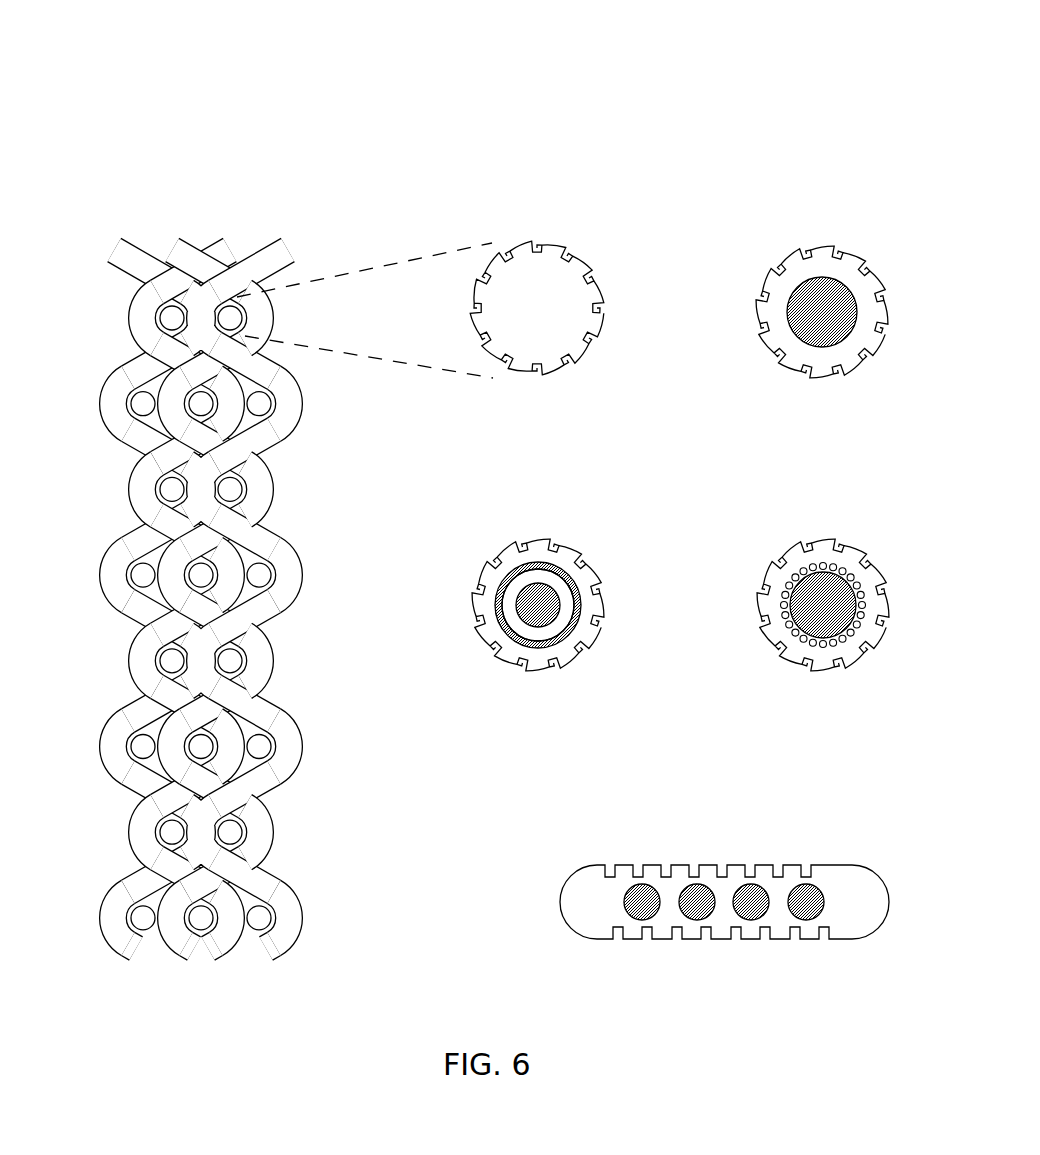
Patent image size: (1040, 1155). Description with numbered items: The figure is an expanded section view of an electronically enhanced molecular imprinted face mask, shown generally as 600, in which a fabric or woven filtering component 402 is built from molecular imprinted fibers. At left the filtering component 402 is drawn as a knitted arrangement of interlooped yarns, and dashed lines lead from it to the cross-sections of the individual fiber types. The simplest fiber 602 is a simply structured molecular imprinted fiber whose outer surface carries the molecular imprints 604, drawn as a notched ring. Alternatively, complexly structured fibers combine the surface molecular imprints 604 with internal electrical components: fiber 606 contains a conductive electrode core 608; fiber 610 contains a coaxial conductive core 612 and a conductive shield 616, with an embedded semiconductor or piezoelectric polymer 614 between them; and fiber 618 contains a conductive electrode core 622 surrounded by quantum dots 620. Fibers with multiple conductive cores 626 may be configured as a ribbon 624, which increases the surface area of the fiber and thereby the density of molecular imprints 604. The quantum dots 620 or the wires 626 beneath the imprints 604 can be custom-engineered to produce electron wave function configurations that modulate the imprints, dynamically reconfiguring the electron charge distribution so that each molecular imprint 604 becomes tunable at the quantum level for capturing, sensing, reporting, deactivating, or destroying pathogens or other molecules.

The textile system with embedded yarns 600 is at (163, 474).
The fabric or woven filtering component 402 is at (287, 228).
The simply structured molecular imprinted fibers 602 is at (420, 288).
The molecular imprints 604 is at (576, 364).
The complexly structured molecular imprinted fiber 606 is at (835, 288).
The conductive electrode core 608 is at (847, 287).
The complexly structured molecular imprinted fiber 610 is at (551, 604).
The coaxial conductive core 612 is at (573, 565).
The embedded semiconductor or piezoelectric polymer 614 is at (594, 586).
The conductive shield 616 is at (565, 612).
The complexly structured molecular imprinted fiber 618 is at (838, 582).
The quantum dots 620 is at (847, 572).
The conductive electrode core 622 is at (852, 608).
The ribbon 624 is at (725, 887).
The multiple conductive cores 626 is at (826, 903).